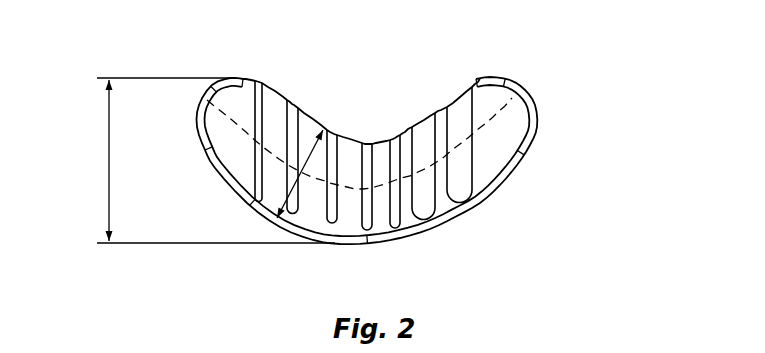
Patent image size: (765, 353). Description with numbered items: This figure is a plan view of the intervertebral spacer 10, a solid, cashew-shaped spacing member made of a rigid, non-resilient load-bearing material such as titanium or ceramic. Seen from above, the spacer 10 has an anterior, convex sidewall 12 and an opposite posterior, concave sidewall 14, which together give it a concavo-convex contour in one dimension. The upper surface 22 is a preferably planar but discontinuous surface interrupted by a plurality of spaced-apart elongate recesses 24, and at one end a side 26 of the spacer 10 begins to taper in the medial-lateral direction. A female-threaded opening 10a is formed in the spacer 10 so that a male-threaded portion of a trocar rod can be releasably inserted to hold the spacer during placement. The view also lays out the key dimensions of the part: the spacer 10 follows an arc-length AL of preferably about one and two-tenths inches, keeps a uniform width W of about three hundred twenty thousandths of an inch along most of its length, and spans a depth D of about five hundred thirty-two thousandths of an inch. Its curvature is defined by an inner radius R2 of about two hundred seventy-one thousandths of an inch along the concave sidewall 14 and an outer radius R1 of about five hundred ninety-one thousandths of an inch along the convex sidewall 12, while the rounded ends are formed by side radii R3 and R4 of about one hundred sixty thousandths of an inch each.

The spacer 10 is at (514, 61).
The female-threaded opening 10a is at (531, 96).
The anterior, convex sidewall 12 is at (410, 241).
The posterior, concave sidewall 14 is at (413, 150).
The upper surface 22 is at (490, 97).
The elongate recesses 24 is at (387, 214).
The side 26 is at (242, 100).
The arc-length AL is at (487, 134).
The depth D is at (216, 160).
The width W is at (323, 130).
The outer radius R1 is at (467, 221).
The inner radius R2 is at (384, 135).
The side radius R3 is at (542, 131).
The side radius R4 is at (200, 109).